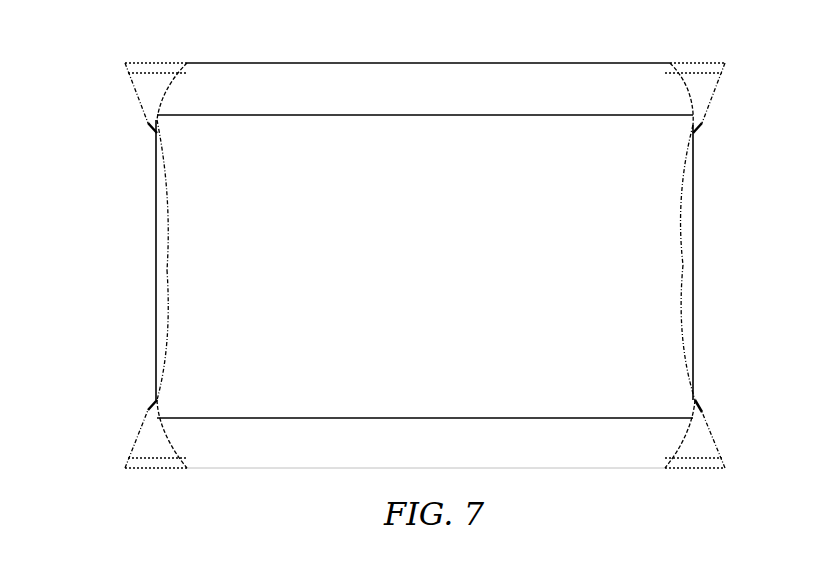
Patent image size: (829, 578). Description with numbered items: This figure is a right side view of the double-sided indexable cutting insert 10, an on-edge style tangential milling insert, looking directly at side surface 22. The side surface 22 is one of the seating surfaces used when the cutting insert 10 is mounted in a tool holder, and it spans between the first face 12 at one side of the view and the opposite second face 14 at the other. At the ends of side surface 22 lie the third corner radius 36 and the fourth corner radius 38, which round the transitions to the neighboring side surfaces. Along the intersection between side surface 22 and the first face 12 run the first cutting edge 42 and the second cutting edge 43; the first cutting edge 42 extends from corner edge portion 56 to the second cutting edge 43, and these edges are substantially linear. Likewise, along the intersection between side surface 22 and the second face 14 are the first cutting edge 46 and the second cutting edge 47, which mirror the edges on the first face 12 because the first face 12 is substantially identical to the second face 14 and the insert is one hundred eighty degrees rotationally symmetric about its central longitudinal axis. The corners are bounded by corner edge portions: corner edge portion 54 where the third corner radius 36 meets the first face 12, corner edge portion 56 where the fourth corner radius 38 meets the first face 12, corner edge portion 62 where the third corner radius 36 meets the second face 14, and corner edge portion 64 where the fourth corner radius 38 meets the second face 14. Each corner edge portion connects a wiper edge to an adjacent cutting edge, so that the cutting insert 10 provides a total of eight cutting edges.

The cutting insert 10 is at (402, 266).
The first face 12 is at (159, 265).
The second face 14 is at (696, 247).
The side surface 22 is at (342, 165).
The third corner radius 36 is at (258, 455).
The fourth corner radius 38 is at (228, 80).
The first cutting edge 42 is at (160, 393).
The second cutting edge 43 is at (165, 216).
The first cutting edge 46 is at (690, 194).
The second cutting edge 47 is at (690, 373).
The corner edge portion 54 is at (180, 448).
The corner edge portion 56 is at (168, 92).
The corner edge portion 62 is at (680, 442).
The corner edge portion 64 is at (682, 91).